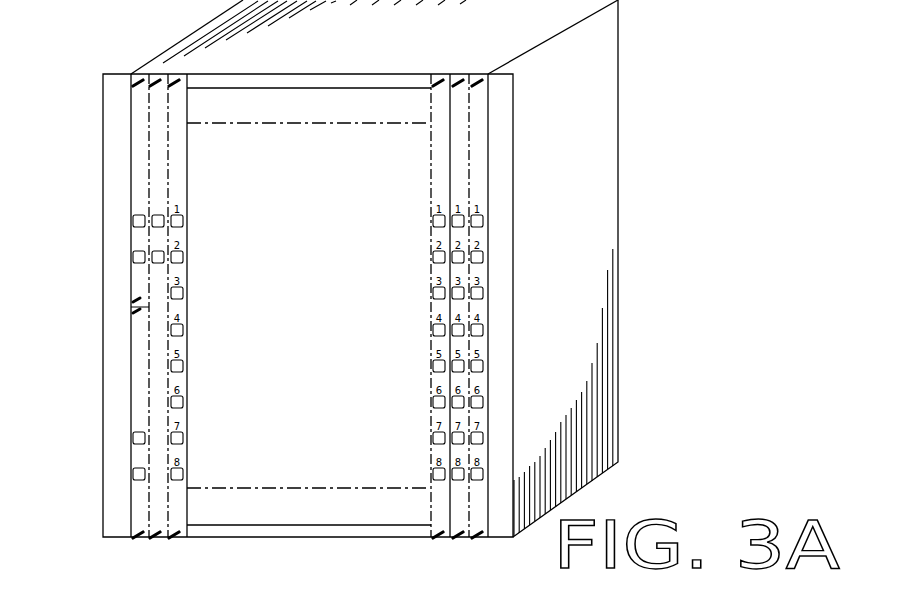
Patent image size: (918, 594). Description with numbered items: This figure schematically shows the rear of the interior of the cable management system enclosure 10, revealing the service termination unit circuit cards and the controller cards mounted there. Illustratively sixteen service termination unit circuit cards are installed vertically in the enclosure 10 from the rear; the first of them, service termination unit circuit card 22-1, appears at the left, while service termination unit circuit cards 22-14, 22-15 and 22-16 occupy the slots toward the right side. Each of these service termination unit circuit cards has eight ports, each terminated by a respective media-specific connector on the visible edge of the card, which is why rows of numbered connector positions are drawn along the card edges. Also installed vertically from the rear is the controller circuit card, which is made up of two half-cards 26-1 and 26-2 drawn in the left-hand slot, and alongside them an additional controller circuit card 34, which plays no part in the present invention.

The enclosure 10 is at (590, 52).
The additional controller circuit card 34 is at (157, 124).
The half-card 26-1 is at (138, 400).
The half-card 26-2 is at (140, 168).
The service termination unit circuit card 22-1 is at (178, 170).
The service termination unit circuit card 22-14 is at (438, 124).
The service termination unit circuit card 22-15 is at (460, 163).
The service termination unit circuit card 22-16 is at (479, 150).